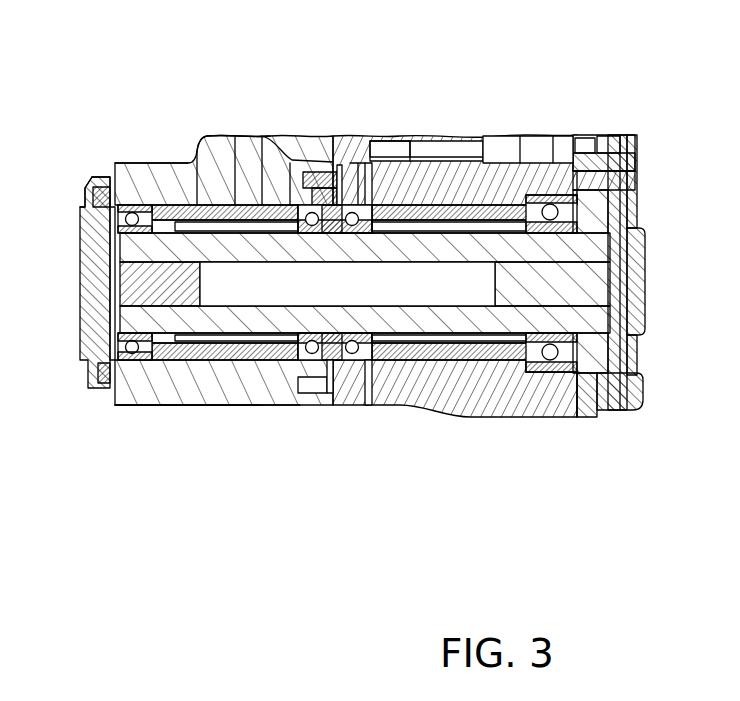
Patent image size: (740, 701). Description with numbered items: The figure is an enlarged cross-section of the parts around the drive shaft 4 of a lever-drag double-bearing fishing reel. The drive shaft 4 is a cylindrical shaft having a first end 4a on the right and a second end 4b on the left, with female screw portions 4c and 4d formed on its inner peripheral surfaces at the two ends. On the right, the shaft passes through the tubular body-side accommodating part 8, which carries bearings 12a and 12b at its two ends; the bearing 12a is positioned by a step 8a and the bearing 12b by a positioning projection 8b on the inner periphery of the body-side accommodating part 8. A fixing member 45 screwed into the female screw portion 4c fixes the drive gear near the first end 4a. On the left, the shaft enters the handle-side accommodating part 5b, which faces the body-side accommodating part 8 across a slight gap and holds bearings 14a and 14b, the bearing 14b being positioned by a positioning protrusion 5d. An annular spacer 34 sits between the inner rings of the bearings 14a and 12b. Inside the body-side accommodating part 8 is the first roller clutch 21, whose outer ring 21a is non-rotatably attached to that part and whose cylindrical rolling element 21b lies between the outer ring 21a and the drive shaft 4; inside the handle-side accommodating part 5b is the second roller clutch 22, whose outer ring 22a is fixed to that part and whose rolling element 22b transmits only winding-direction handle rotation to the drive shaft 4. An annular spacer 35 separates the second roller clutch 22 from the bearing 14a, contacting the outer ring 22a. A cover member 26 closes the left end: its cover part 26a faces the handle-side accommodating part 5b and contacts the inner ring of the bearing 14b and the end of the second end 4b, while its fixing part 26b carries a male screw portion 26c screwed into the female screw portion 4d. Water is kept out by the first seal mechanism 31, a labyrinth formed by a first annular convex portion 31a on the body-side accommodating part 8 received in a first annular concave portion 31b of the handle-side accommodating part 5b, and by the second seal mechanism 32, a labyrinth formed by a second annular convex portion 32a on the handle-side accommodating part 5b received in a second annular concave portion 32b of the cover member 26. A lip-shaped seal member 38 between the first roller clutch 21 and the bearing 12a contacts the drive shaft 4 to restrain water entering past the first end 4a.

The drive shaft 4 is at (540, 135).
The first end 4a is at (643, 327).
The second end 4b is at (82, 337).
The female screw portion 4c is at (640, 280).
The female screw portion 4d is at (210, 279).
The handle-side accommodating part 5b is at (260, 398).
The positioning protrusion 5d is at (138, 163).
The body-side accommodating part 8 is at (480, 410).
The step 8a is at (518, 415).
The positioning projection 8b is at (358, 165).
The bearing 12a is at (553, 415).
The bearing 12b is at (425, 412).
The bearing 14a is at (305, 172).
The bearing 14b is at (104, 180).
The first roller clutch 21 is at (483, 60).
The outer ring 21a is at (405, 140).
The rolling element 21b is at (460, 140).
The second roller clutch 22 is at (250, 57).
The outer ring 22a is at (183, 150).
The rolling element 22b is at (235, 137).
The cover member 26 is at (76, 264).
The cover part 26a is at (82, 180).
The fixing part 26b is at (200, 398).
The male screw portion 26c is at (100, 293).
The first seal mechanism 31 is at (405, 507).
The first annular convex portion 31a is at (327, 395).
The first annular concave portion 31b is at (313, 398).
The second seal mechanism 32 is at (170, 496).
The second annular convex portion 32a is at (130, 383).
The second annular concave portion 32b is at (115, 385).
The spacer 34 is at (339, 165).
The spacer 35 is at (290, 170).
The seal member 38 is at (505, 138).
The fixing member 45 is at (643, 247).